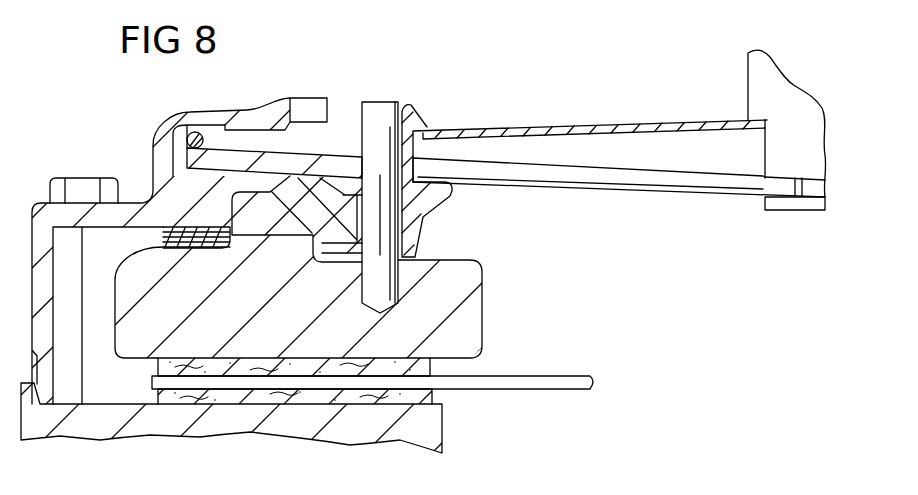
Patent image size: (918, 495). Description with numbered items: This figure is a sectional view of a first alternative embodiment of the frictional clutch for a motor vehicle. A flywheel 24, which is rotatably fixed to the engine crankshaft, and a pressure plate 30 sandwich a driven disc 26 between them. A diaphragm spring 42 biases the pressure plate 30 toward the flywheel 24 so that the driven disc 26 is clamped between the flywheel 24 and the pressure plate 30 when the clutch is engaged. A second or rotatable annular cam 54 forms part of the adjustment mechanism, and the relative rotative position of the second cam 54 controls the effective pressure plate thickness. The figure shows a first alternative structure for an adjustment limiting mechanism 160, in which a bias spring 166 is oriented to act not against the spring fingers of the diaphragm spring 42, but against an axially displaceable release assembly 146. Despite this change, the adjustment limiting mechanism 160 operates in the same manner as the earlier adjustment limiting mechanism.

The flywheel 24 is at (442, 428).
The driven disc 26 is at (559, 377).
The pressure plate 30 is at (485, 318).
The diaphragm spring 42 is at (627, 193).
The second cam 54 is at (230, 212).
The release assembly 146 is at (747, 90).
The adjustment limiting mechanism 160 is at (493, 231).
The bias spring 166 is at (550, 128).